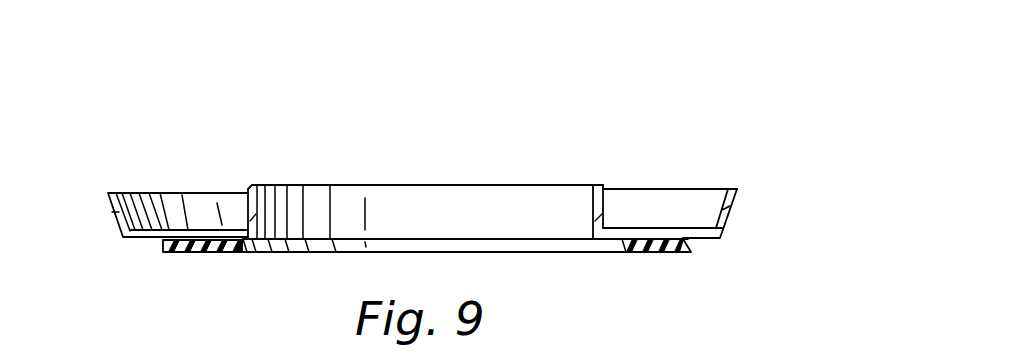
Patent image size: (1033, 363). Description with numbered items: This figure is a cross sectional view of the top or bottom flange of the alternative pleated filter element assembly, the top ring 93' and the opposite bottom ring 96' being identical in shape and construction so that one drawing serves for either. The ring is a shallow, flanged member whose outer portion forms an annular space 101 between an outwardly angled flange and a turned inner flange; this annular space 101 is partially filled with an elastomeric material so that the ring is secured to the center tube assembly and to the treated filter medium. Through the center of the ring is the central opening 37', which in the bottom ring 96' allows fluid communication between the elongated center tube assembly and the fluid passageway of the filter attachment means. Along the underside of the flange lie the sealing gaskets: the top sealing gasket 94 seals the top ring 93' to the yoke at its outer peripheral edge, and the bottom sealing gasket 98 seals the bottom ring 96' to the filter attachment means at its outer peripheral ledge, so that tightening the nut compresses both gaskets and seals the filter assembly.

The central opening 37' is at (425, 175).
The annular space 101 is at (173, 207).
The bottom ring 96' is at (710, 158).
The top ring 93' is at (673, 123).
The top sealing gasket 94 is at (182, 250).
The bottom sealing gasket 98 is at (685, 250).